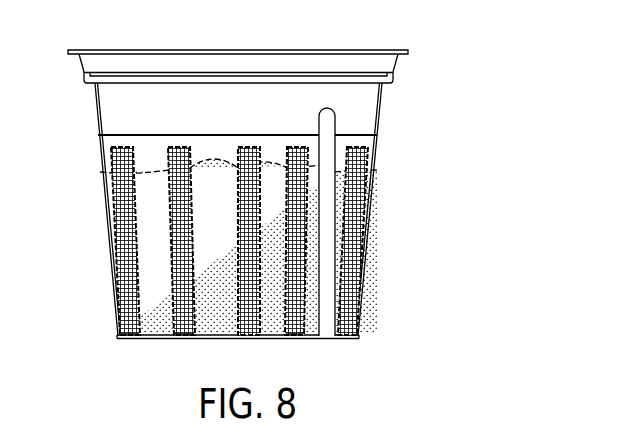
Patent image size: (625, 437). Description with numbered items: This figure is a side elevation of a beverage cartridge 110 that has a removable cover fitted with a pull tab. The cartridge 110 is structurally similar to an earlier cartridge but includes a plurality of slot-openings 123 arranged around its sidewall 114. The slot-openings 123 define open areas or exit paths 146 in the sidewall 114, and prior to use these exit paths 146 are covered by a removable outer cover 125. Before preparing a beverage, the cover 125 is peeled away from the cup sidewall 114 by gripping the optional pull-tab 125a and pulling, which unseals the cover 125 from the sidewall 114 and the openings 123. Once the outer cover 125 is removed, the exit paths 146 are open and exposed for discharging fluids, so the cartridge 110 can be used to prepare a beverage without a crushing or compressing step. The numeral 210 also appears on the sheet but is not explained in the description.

The beverage cartridge 110 is at (503, 47).
The sidewall 114 is at (97, 113).
The slot-openings 123 is at (238, 152).
The removable outer cover 125 is at (168, 134).
The pull-tab 125a is at (348, 116).
The exit paths 146 is at (288, 327).
The flow path 210 is at (525, 431).